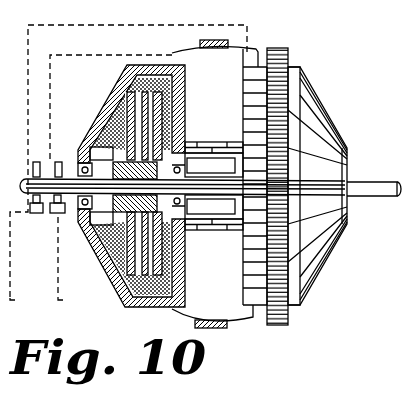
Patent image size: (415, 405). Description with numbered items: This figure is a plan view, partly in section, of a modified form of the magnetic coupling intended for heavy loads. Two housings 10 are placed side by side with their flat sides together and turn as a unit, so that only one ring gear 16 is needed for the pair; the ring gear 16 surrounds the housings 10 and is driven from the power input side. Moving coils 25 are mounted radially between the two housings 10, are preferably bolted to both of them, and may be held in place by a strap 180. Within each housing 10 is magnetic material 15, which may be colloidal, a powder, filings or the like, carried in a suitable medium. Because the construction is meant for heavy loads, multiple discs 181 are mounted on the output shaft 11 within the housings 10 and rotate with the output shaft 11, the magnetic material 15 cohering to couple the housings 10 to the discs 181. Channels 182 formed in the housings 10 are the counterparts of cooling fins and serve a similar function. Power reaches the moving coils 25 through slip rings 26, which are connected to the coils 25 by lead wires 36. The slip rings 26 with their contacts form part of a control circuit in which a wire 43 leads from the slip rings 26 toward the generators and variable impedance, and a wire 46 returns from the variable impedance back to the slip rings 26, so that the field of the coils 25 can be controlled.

The lead wires 36 is at (106, 56).
The channels 182 is at (122, 85).
The slip rings 26 is at (58, 162).
The multiple discs 181 is at (127, 152).
The magnetic material 15 is at (91, 203).
The housing 10 is at (100, 263).
The wire 46 is at (26, 301).
The wire 43 is at (72, 265).
The moving coils 25 is at (248, 52).
The ring gear 16 is at (284, 49).
The strap 180 is at (212, 152).
The output shaft 11 is at (376, 181).